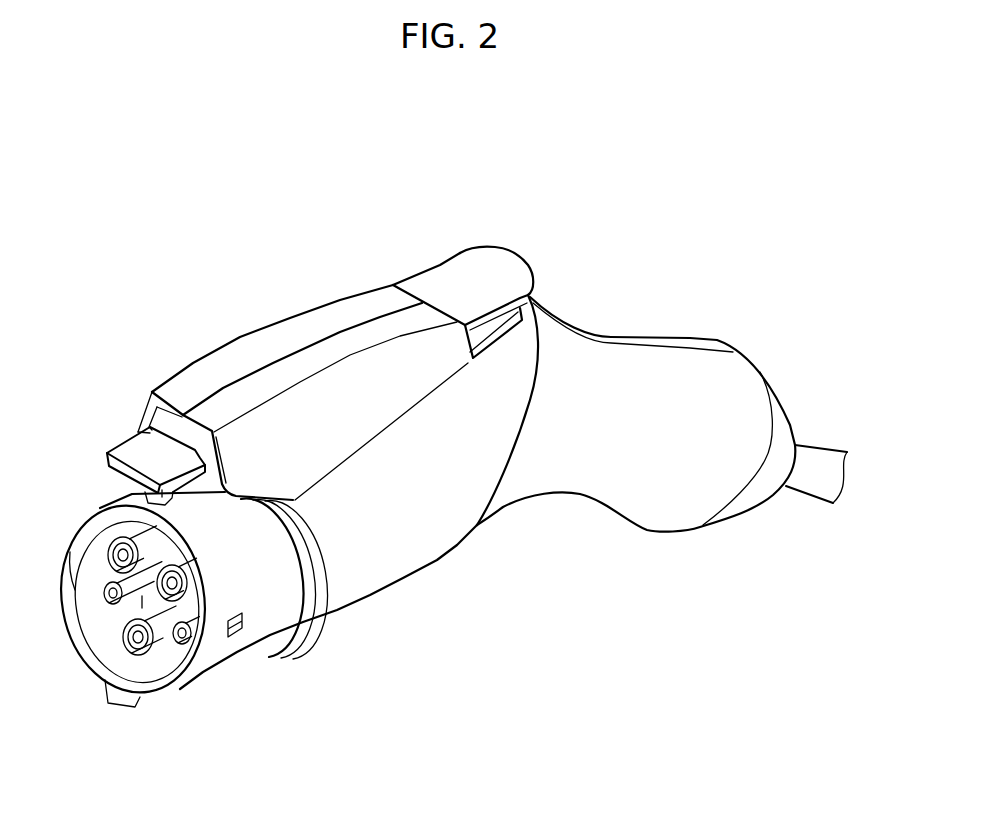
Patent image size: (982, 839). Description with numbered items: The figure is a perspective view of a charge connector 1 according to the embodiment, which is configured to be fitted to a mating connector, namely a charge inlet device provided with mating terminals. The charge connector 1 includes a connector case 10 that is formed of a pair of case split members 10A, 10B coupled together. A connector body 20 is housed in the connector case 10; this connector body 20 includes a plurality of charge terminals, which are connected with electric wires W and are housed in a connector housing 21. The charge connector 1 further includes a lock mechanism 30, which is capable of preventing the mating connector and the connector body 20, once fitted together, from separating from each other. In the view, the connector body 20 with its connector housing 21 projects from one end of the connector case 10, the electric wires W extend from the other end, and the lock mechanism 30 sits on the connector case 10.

The charge connector 1 is at (215, 200).
The connector case 10 is at (338, 255).
The case split member 10A is at (250, 350).
The case split member 10B is at (313, 355).
The connector body 20 is at (192, 697).
The connector housing 21 is at (232, 642).
The lock mechanism 30 is at (145, 448).
The electric wires W is at (807, 473).